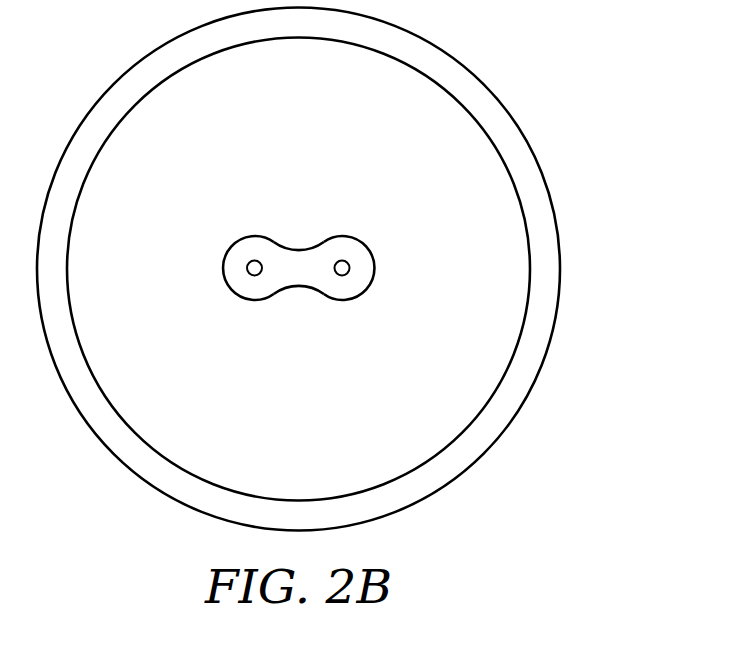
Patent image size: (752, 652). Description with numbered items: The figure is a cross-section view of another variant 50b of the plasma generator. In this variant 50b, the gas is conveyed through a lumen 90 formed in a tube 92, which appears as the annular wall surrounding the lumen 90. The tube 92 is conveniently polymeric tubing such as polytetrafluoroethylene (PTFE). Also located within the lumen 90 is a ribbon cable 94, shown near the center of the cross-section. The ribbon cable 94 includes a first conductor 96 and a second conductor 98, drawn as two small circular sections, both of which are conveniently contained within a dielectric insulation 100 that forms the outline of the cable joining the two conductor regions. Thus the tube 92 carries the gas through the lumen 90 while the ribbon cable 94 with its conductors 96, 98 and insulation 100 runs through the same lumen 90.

The variant of plasma generator 50b is at (338, 269).
The lumen 90 is at (458, 397).
The tube 92 is at (552, 335).
The ribbon cable 94 is at (302, 267).
The first conductor 96 is at (248, 262).
The second conductor 98 is at (347, 263).
The dielectric insulation 100 is at (302, 250).